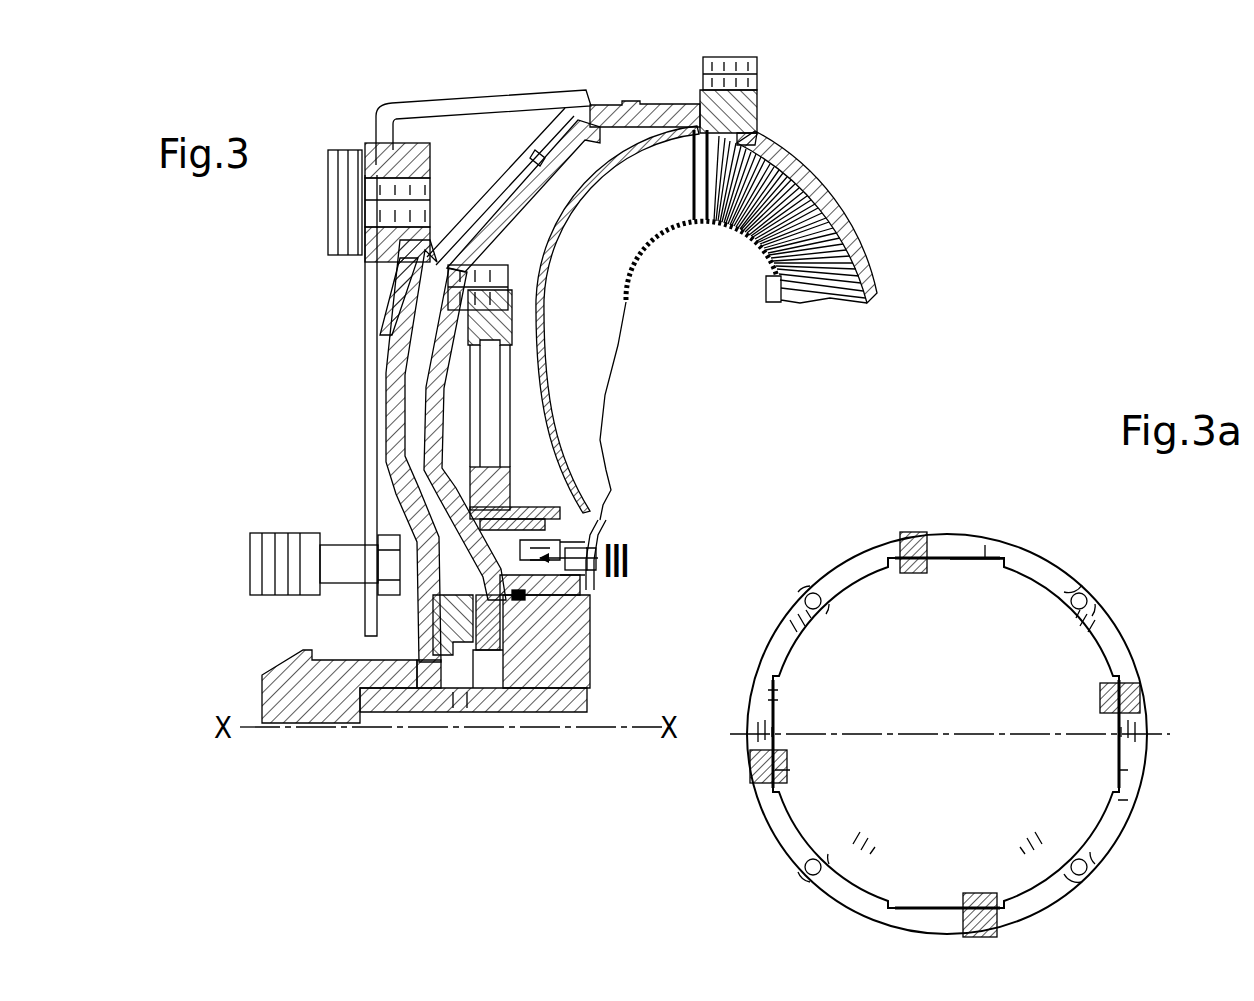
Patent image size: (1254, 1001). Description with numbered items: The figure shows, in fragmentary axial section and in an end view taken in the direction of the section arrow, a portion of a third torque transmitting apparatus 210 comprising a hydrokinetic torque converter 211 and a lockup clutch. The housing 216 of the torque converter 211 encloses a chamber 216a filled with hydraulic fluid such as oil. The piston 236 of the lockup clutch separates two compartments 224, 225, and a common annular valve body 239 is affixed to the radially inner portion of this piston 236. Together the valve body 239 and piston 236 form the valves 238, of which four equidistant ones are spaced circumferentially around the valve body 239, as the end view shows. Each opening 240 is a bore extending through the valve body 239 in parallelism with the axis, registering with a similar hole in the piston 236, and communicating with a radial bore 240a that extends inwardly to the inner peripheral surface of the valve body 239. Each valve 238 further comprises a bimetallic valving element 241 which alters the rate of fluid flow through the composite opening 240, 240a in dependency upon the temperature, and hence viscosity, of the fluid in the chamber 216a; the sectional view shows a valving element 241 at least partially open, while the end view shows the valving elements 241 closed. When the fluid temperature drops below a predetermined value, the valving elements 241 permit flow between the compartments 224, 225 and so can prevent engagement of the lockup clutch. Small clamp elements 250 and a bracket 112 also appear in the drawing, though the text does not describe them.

In FIG. 3, the bracket 112 is at (470, 168).
In FIG. 3, the third torque transmitting apparatus 210 is at (868, 154).
In FIG. 3, the torque converter 211 is at (878, 247).
In FIG. 3, the housing 216 is at (612, 100).
In FIG. 3, the chamber 216a is at (722, 291).
In FIG. 3, the compartment 224 is at (533, 253).
In FIG. 3, the compartment 225 is at (406, 381).
In FIG. 3, the piston 236 is at (442, 488).
In FIG. 3, the valve 238 is at (368, 600).
In FIG. 3A, the valve 238 is at (982, 530).
In FIG. 3, the annular valve body 239 is at (578, 523).
In FIG. 3A, the annular valve body 239 is at (1118, 634).
In FIG. 3, the opening 240 is at (477, 562).
In FIG. 3A, the opening 240 is at (990, 548).
In FIG. 3, the bore 240a is at (520, 598).
In FIG. 3A, the bore 240a is at (985, 562).
In FIG. 3, the valving element 241 is at (486, 603).
In FIG. 3A, the valving element 241 is at (952, 562).
In FIG. 3A, the clamp element 250 is at (905, 575).